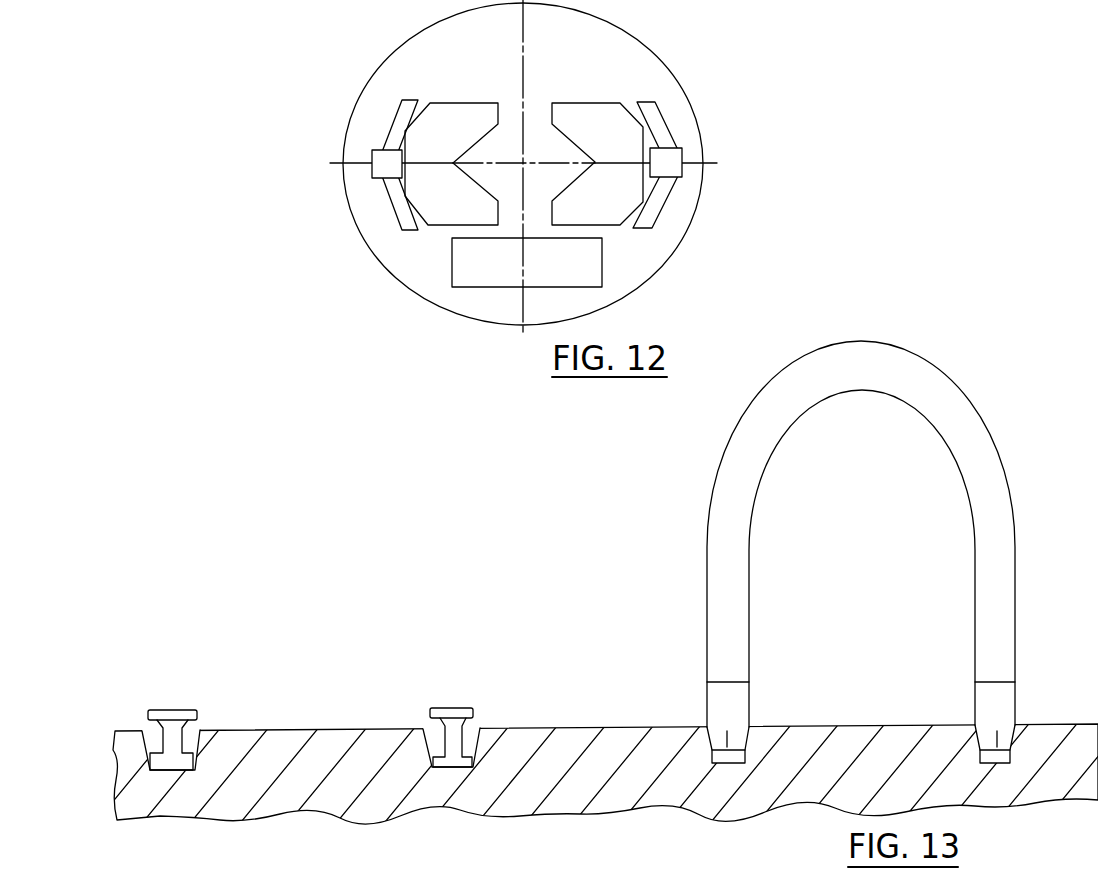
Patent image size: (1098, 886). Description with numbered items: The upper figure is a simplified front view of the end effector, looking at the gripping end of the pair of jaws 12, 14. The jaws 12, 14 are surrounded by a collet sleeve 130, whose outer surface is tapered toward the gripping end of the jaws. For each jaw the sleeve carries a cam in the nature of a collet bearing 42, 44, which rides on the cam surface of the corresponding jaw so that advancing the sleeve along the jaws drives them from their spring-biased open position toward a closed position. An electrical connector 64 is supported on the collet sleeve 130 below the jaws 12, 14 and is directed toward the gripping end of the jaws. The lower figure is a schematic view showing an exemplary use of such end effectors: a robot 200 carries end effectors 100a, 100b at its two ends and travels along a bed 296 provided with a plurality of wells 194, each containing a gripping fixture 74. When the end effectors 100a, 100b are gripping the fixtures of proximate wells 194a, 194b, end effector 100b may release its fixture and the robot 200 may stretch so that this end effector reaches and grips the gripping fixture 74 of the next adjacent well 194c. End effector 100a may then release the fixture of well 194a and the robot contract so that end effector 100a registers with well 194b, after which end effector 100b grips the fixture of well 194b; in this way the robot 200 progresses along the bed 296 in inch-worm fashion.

In FIG. 12, the jaw 12 is at (588, 108).
In FIG. 12, the jaw 14 is at (462, 108).
In FIG. 12, the collet sleeve 130 is at (411, 100).
In FIG. 12, the collet bearing 44 is at (373, 158).
In FIG. 12, the collet bearing 42 is at (683, 158).
In FIG. 12, the electrical connector 64 is at (470, 277).
In FIG. 13, the robot 200 is at (967, 398).
In FIG. 13, the end effector 100a is at (973, 710).
In FIG. 13, the end effector 100b is at (752, 710).
In FIG. 13, the well 194 is at (144, 701).
In FIG. 13, the well 194a is at (1039, 706).
In FIG. 13, the well 194b is at (690, 710).
In FIG. 13, the well 194c is at (428, 692).
In FIG. 13, the gripping fixture 74 is at (187, 708).
In FIG. 13, the bed 296 is at (582, 727).